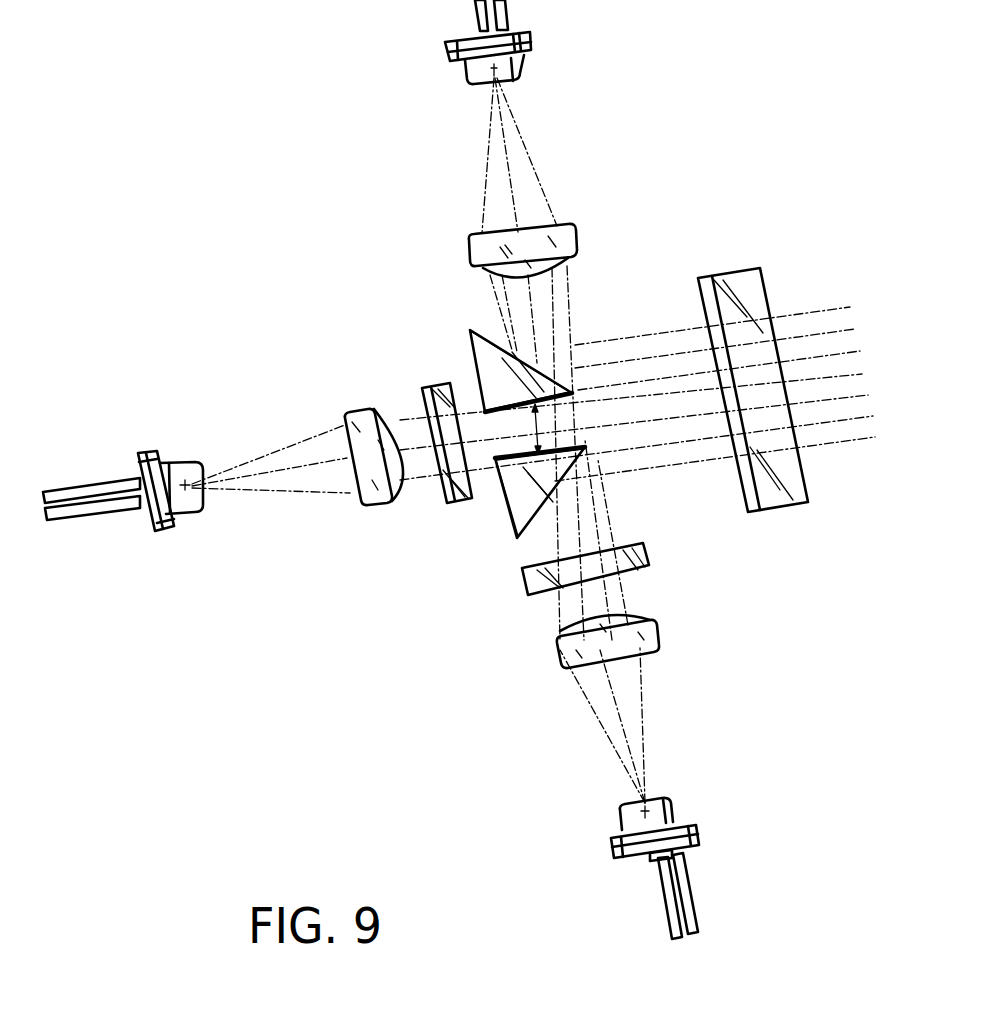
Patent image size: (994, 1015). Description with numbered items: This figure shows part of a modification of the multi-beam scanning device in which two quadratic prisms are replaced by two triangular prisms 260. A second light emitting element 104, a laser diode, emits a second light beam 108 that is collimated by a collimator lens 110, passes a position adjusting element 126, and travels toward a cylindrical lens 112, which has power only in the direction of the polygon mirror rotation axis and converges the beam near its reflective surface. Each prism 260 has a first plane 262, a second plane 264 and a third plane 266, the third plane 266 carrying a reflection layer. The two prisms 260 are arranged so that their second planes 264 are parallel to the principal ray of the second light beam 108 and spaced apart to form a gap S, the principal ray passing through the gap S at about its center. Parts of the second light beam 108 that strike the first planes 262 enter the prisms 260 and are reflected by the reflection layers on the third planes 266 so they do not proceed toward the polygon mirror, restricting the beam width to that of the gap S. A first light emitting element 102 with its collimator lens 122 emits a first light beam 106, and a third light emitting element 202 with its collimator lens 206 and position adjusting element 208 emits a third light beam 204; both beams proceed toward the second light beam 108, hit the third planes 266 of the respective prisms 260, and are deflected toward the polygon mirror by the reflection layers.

The first light emitting element 102 is at (531, 38).
The second light emitting element 104 is at (143, 455).
The first light beam 106 is at (488, 147).
The second light beam 108 is at (270, 492).
The collimator lens 110 is at (358, 422).
The cylindrical lens 112 is at (753, 250).
The collimator lens 122 is at (573, 238).
The position adjusting element 126 is at (445, 490).
The third light emitting element 202 is at (717, 800).
The third light beam 204 is at (603, 733).
The collimator lens 206 is at (657, 645).
The position adjusting element 208 is at (648, 563).
The triangular prism 260 is at (453, 316).
The first plane 262 is at (468, 350).
The second plane 264 is at (495, 417).
The third plane 266 is at (540, 360).
The gap S is at (552, 419).